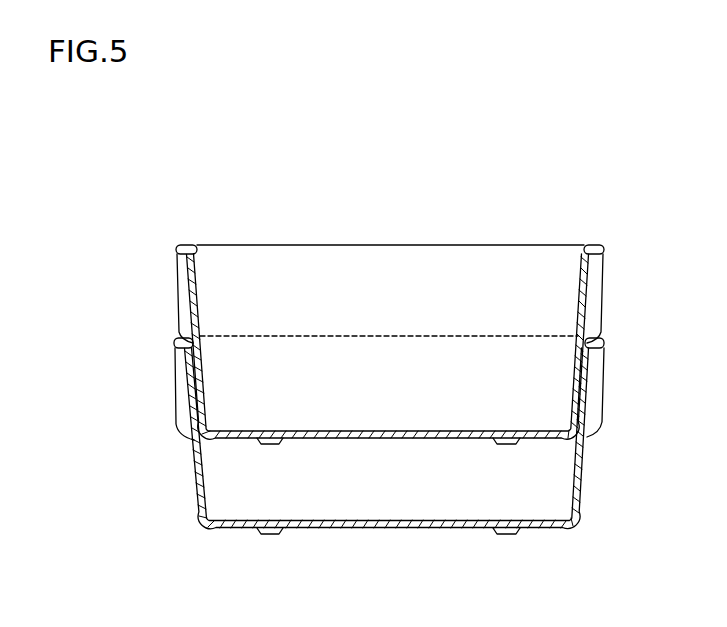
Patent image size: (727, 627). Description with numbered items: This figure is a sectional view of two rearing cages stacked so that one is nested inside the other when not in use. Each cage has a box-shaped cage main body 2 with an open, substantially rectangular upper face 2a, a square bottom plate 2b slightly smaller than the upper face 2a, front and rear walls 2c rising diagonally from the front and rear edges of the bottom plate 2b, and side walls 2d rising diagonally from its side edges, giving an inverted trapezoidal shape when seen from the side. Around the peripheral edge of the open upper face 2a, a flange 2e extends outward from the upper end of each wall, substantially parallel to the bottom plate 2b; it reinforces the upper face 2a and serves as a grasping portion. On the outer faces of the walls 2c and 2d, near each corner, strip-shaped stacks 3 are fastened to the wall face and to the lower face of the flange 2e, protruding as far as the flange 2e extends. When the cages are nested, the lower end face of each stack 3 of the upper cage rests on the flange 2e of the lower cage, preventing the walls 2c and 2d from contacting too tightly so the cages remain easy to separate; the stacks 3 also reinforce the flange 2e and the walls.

The cage main body 2 is at (386, 283).
The open upper face 2a is at (266, 245).
The bottom plate 2b is at (463, 431).
The front and rear walls 2c is at (196, 277).
The side walls 2d is at (518, 398).
The flange 2e is at (180, 246).
The stack 3 is at (178, 292).